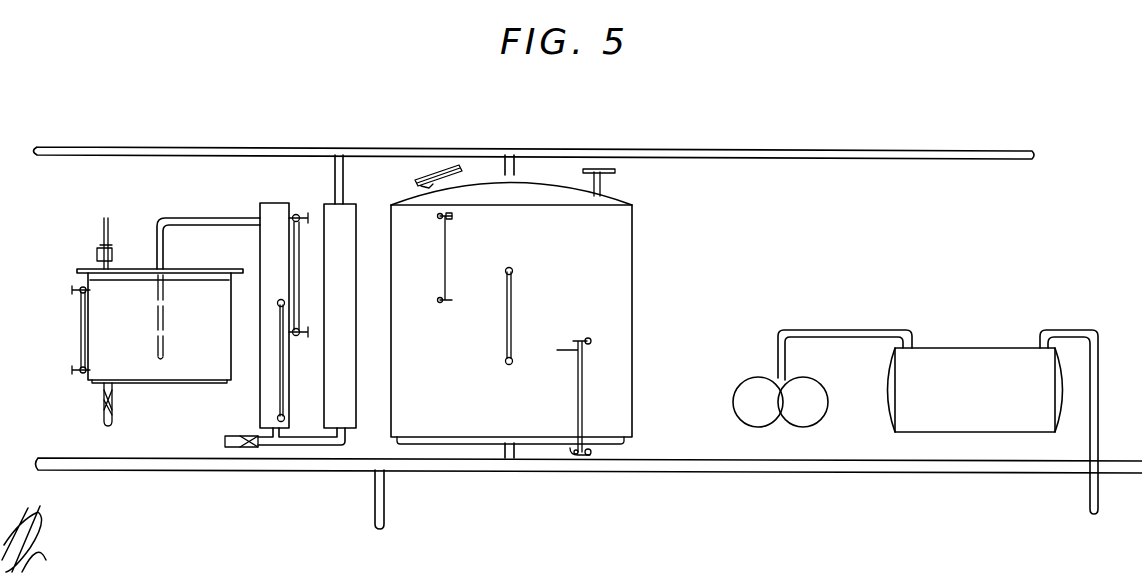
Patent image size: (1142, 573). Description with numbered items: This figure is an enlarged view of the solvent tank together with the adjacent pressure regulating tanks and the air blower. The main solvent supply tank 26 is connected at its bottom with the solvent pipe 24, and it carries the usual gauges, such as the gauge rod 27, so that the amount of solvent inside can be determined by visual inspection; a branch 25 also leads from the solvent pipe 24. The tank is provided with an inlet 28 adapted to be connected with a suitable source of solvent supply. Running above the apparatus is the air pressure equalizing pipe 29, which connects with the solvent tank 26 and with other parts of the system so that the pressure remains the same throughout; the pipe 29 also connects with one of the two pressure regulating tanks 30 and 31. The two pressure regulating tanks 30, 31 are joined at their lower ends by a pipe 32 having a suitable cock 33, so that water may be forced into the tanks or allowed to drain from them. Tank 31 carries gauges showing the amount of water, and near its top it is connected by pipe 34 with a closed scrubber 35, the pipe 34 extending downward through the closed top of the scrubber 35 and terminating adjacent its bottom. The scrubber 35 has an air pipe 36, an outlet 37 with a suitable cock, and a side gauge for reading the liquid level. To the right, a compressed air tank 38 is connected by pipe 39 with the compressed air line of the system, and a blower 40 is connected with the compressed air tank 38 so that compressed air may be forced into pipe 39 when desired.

The solvent pipe 24 is at (717, 465).
The drain pipe 25 is at (385, 506).
The main solvent supply tank 26 is at (610, 283).
The gauge rod 27 is at (513, 341).
The inlet 28 is at (604, 186).
The air pressure equalizing pipe 29 is at (765, 152).
The pressure regulating tank 30 is at (340, 350).
The pressure regulating tank 31 is at (268, 398).
The pipe 32 is at (345, 446).
The cock 33 is at (228, 447).
The pipe 34 is at (188, 217).
The closed scrubber 35 is at (157, 326).
The air pipe 36 is at (100, 233).
The outlet 37 is at (113, 420).
The compressed air tank 38 is at (975, 390).
The pipe 39 is at (1098, 415).
The blower 40 is at (822, 378).